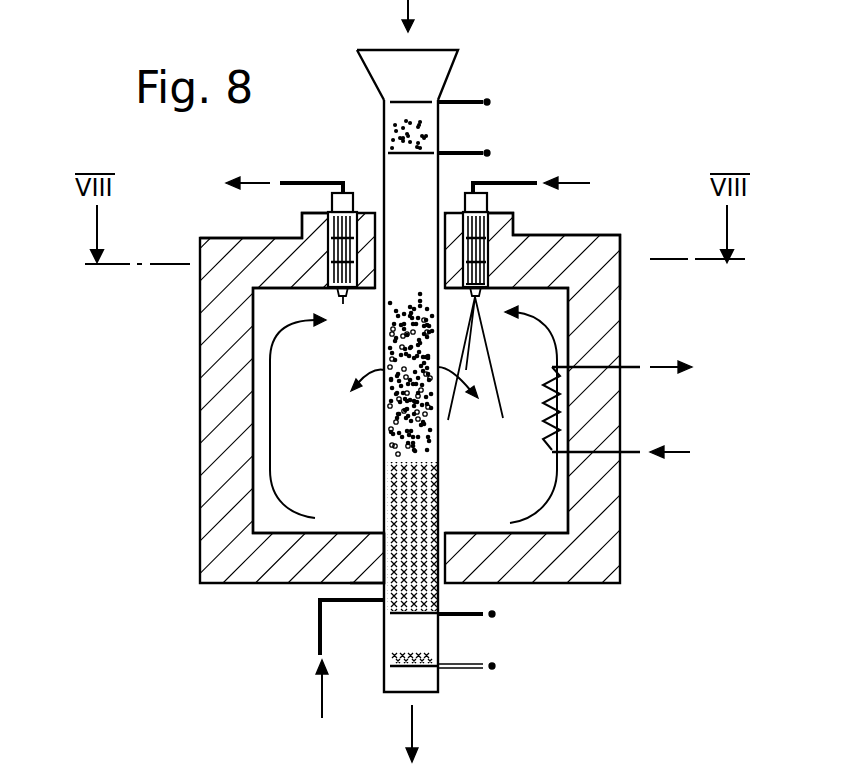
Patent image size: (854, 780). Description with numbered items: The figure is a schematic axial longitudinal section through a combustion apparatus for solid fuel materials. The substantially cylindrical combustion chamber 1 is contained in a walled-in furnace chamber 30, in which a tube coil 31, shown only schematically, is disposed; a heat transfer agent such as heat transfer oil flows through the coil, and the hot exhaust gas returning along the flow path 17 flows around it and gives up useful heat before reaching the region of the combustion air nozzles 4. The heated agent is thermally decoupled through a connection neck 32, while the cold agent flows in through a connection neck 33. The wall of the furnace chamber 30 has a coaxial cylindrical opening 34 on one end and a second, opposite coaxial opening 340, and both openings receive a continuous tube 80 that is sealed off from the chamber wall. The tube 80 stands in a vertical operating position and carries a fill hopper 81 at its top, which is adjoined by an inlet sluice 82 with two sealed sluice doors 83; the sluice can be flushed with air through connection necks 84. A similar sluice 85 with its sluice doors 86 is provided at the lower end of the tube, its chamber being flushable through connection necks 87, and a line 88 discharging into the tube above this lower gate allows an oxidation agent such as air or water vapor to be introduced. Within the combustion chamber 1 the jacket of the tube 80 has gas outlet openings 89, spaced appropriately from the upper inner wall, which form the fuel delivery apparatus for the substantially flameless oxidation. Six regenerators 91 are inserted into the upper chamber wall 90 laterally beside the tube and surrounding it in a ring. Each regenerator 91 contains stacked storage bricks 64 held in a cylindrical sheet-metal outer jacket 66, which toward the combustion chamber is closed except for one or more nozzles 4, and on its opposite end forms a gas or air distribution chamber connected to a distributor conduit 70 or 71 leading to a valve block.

The combustion chamber 1 is at (307, 460).
The combustion air nozzle 4 is at (343, 304).
The exhaust gas flow path 17 is at (555, 490).
The furnace chamber 30 is at (605, 553).
The tube coil 31 is at (548, 432).
The connection neck 32 is at (655, 367).
The connection neck 33 is at (640, 452).
The coaxial cylindrical opening 34 is at (386, 260).
The storage brick 64 is at (618, 250).
The outer jacket 66 is at (490, 277).
The distributor conduit 70 is at (537, 180).
The distributor conduit 71 is at (343, 180).
The continuous tube 80 is at (390, 468).
The fill hopper 81 is at (365, 68).
The inlet sluice 82 is at (440, 124).
The sluice door 83 is at (418, 95).
The connection neck 84 is at (468, 100).
The lower sluice 85 is at (423, 642).
The sluice door 86 is at (425, 613).
The connection neck 87 is at (477, 620).
The line 88 is at (318, 628).
The gas outlet opening 89 is at (382, 375).
The upper chamber wall 90 is at (293, 233).
The regenerator 91 is at (320, 248).
The second coaxial opening 340 is at (383, 562).